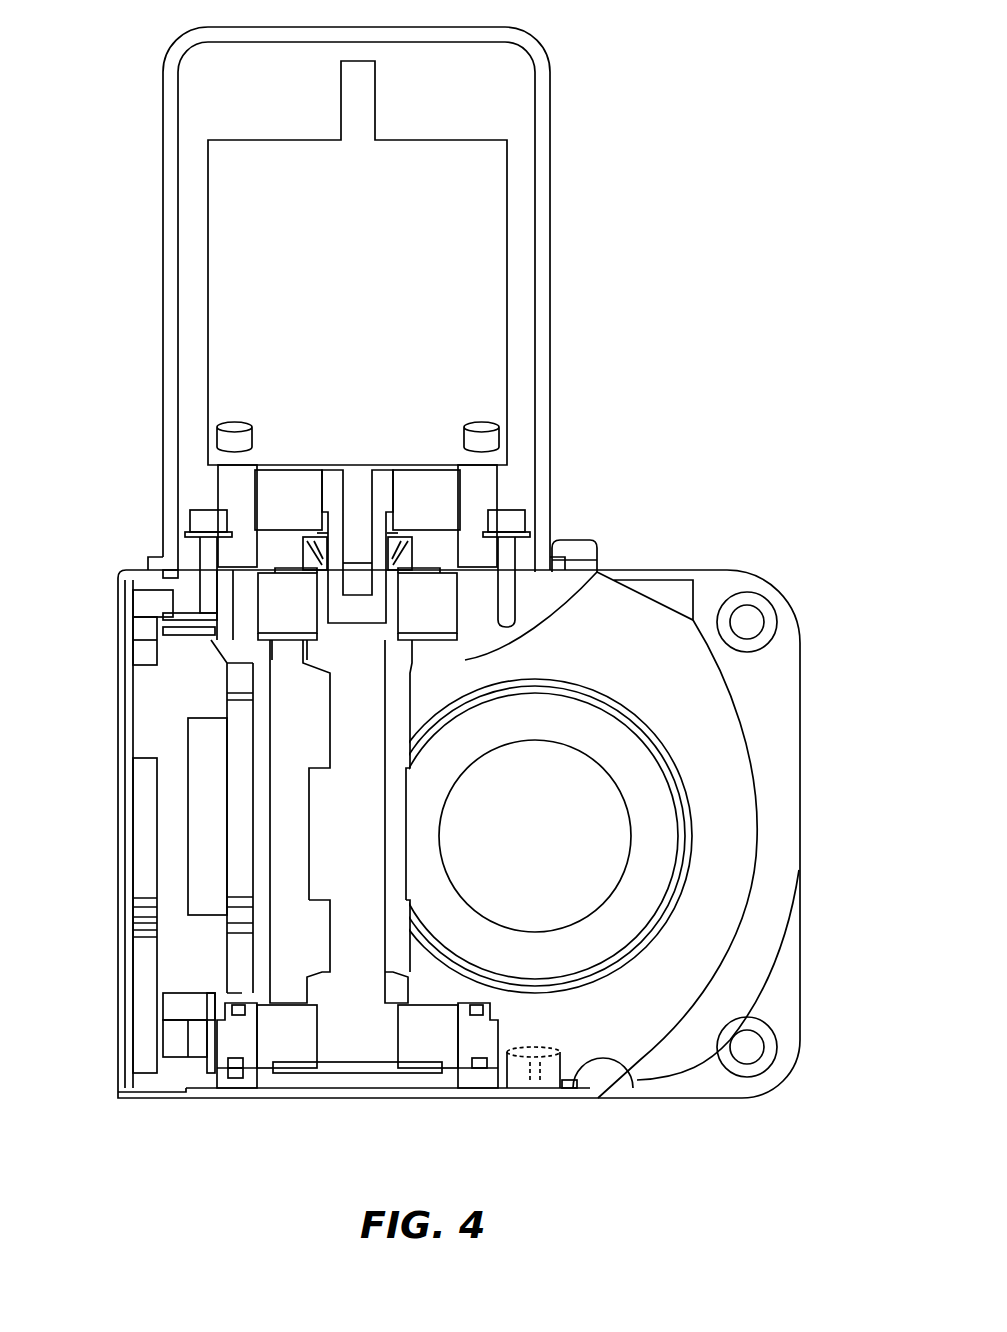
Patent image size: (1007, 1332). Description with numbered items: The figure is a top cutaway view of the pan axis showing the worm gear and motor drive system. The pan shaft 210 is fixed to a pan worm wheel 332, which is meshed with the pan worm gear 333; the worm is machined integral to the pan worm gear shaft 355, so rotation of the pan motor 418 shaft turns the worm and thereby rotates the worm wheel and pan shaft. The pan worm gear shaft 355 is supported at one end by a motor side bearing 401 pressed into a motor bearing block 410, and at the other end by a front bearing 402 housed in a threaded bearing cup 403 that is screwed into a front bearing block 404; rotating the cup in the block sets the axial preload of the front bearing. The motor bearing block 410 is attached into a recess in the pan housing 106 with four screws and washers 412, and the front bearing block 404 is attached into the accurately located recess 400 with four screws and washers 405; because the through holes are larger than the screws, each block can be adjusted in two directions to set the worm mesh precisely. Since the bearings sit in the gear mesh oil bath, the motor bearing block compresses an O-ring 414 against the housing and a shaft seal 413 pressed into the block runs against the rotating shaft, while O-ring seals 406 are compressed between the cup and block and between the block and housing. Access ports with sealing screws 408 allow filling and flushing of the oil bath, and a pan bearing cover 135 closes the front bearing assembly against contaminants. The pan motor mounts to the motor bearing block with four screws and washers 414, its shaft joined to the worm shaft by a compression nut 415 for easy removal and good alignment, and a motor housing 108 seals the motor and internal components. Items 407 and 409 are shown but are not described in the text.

The motor housing 108 is at (188, 44).
The pan motor 418 is at (510, 300).
The screws and washers 414 is at (507, 430).
The compression nut 415 is at (325, 495).
The motor bearing block 410 is at (500, 490).
The screws and washers 412 is at (520, 520).
The shaft seal 413 is at (165, 555).
The motor side bearing 401 is at (440, 603).
The pan housing 106 is at (800, 1000).
The pan worm wheel 332 is at (635, 745).
The pan shaft 210 is at (640, 825).
The pan worm gear 333 is at (325, 805).
The pan worm gear shaft 355 is at (325, 935).
The bracket 407 is at (190, 1012).
The O-ring seal 406 is at (195, 1040).
The recess 400 is at (220, 1080).
The front bearing block 404 is at (232, 1070).
The bearing cup 403 is at (340, 1090).
The front bearing 402 is at (428, 1050).
The screws and washers 405 is at (478, 1072).
The pan bearing cover 135 is at (540, 1090).
The access ports and sealing screws 408 is at (553, 1078).
The hump 409 is at (608, 1060).